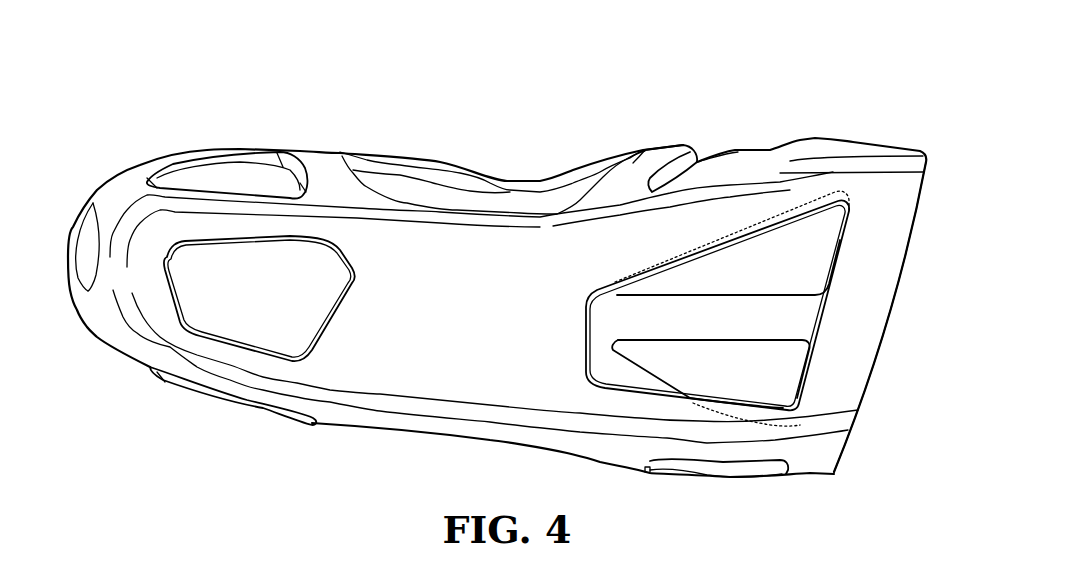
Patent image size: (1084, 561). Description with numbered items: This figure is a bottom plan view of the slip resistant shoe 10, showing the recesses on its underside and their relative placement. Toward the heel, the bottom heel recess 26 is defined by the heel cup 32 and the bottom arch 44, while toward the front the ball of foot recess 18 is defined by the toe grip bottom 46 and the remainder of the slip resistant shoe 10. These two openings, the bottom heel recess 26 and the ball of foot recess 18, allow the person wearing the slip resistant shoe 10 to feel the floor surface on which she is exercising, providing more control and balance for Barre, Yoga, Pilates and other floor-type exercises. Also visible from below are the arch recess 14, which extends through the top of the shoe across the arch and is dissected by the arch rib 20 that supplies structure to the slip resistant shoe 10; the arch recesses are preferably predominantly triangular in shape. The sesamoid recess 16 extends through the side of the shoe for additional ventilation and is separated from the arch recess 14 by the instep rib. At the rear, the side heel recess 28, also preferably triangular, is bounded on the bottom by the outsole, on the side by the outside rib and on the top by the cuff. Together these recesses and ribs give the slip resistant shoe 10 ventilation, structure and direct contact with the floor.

The slip resistant shoe 10 is at (132, 141).
The arch recess 14 is at (820, 226).
The sesamoid recess 16 is at (733, 467).
The ball of foot recess 18 is at (745, 235).
The arch rib 20 is at (775, 340).
The bottom heel recess 26 is at (235, 330).
The side heel recess 28 is at (240, 177).
The heel cup 32 is at (103, 307).
The bottom arch 44 is at (413, 375).
The toe grip bottom 46 is at (875, 265).